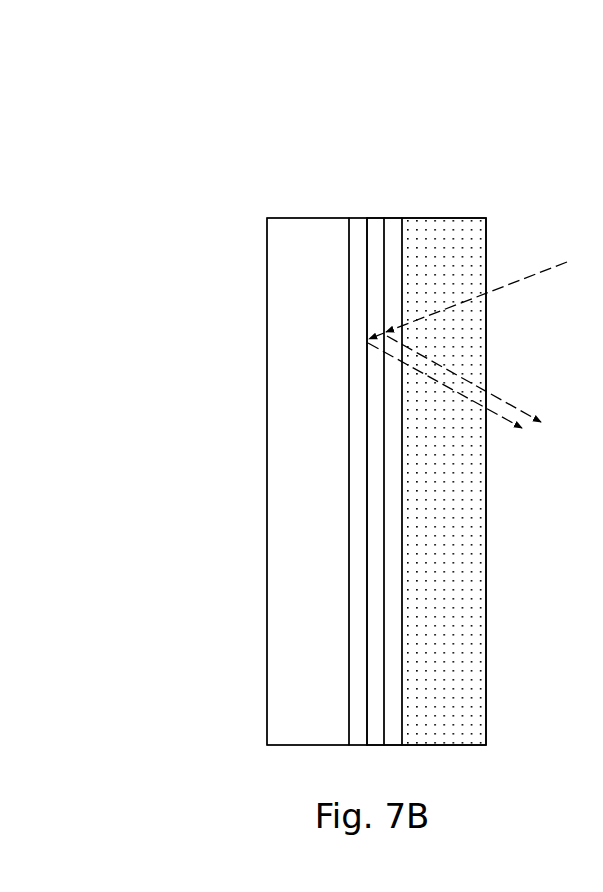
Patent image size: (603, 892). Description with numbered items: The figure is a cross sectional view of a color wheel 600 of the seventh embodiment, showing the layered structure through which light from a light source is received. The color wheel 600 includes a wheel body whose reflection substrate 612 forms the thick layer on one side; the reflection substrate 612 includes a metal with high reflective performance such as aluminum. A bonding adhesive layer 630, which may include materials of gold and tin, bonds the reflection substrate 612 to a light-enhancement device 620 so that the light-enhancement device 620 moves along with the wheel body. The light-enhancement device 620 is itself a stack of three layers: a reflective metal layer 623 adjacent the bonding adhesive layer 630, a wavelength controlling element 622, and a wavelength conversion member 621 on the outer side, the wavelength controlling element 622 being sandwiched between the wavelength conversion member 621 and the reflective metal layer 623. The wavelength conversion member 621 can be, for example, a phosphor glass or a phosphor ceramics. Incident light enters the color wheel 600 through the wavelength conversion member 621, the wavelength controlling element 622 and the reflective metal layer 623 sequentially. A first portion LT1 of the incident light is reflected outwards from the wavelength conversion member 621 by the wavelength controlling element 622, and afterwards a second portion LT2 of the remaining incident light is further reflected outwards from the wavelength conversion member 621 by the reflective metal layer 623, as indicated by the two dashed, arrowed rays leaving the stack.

The color wheel 600 is at (458, 88).
The reflection substrate 612 is at (305, 228).
The bonding adhesive layer 630 is at (355, 228).
The light-enhancement device 620 is at (513, 138).
The reflective metal layer 623 is at (375, 228).
The wavelength controlling element 622 is at (392, 228).
The wavelength conversion member 621 is at (437, 228).
The first portion of the incident lights LT1 is at (488, 393).
The second portion of the remaining incident lights LT2 is at (498, 413).